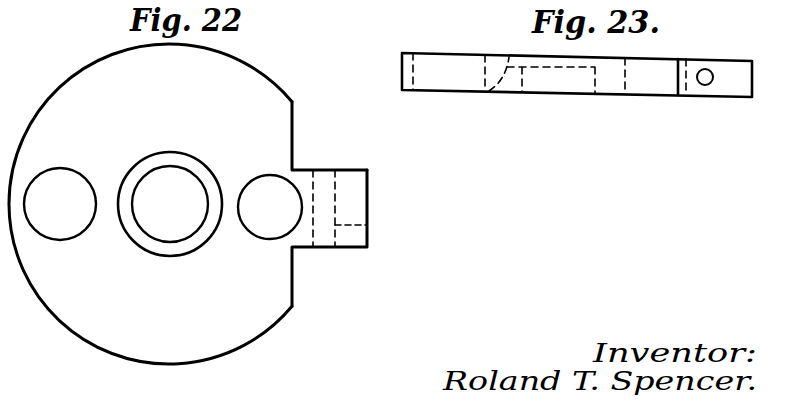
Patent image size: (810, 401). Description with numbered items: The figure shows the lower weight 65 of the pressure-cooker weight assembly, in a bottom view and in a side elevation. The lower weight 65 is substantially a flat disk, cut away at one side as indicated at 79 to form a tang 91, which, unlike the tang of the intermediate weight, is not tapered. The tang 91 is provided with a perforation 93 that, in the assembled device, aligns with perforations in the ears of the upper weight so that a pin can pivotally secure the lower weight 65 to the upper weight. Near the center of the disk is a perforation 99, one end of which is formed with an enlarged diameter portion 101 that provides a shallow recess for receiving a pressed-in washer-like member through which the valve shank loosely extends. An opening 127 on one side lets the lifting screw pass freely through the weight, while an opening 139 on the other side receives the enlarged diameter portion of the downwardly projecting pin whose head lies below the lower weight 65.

In FIG. 22, the lower weight 65 is at (76, 88).
In FIG. 23, the lower weight 65 is at (497, 54).
In FIG. 22, the cut-away side 79 is at (302, 167).
In FIG. 22, the tang 91 is at (355, 187).
In FIG. 23, the tang 91 is at (752, 67).
In FIG. 22, the perforation 93 is at (369, 222).
In FIG. 23, the perforation 93 is at (706, 76).
In FIG. 22, the perforation 99 is at (198, 175).
In FIG. 23, the perforation 99 is at (530, 93).
In FIG. 22, the enlarged diameter portion 101 is at (163, 152).
In FIG. 23, the enlarged diameter portion 101 is at (493, 88).
In FIG. 22, the opening 127 is at (258, 239).
In FIG. 22, the opening 139 is at (81, 170).
In FIG. 23, the opening 139 is at (406, 72).